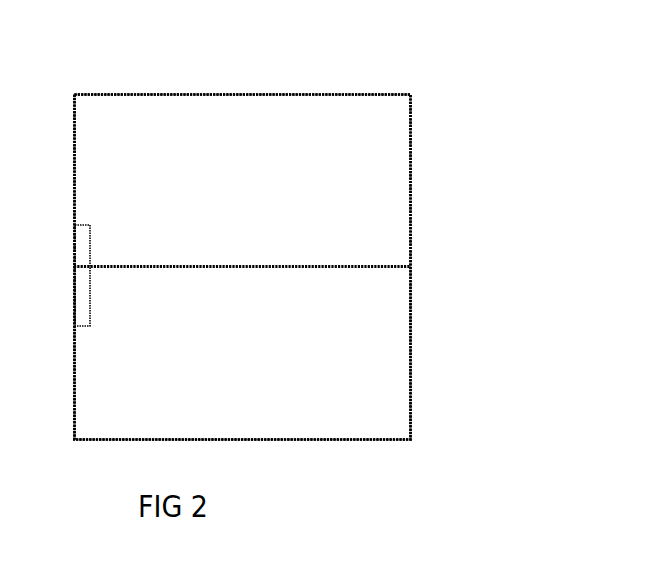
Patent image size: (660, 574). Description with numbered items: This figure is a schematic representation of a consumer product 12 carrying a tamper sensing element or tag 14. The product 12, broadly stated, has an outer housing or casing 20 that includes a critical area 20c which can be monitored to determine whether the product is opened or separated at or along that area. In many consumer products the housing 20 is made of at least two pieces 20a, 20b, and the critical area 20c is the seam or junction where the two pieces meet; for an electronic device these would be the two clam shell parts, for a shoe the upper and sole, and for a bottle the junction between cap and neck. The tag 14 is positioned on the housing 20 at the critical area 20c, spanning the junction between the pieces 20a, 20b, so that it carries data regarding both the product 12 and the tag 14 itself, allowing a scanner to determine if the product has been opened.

The consumer product or cargo 12 is at (344, 230).
The tamper sensing element or tag 14 is at (92, 250).
The outer housing or casing 20 is at (340, 230).
The first housing piece 20a is at (411, 202).
The second housing piece 20b is at (411, 383).
The critical area 20c is at (383, 267).